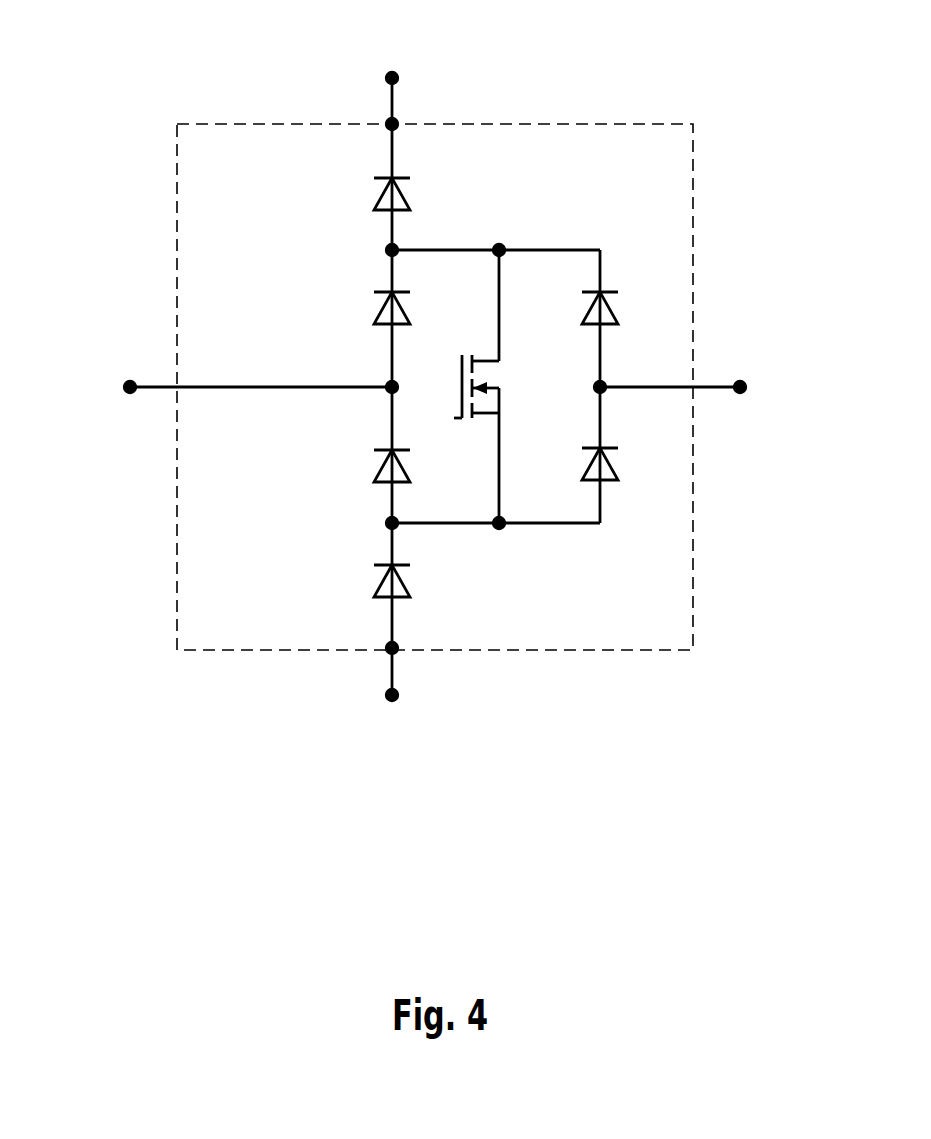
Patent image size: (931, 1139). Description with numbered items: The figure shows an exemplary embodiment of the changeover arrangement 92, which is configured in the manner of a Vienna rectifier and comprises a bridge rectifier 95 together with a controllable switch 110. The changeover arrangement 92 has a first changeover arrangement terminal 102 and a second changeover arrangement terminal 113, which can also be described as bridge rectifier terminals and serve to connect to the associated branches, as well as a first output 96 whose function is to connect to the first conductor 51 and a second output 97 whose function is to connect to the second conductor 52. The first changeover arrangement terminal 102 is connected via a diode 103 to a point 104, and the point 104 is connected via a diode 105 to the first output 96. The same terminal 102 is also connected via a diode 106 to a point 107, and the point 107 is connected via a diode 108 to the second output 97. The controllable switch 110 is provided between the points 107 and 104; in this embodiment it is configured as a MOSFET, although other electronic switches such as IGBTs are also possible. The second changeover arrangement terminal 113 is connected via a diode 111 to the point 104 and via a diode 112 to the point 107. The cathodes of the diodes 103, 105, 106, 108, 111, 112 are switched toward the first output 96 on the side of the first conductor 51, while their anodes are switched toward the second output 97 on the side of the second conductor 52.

The first conductor 51 is at (392, 76).
The second conductor 52 is at (392, 698).
The changeover arrangement 92 is at (694, 182).
The bridge rectifier 95 is at (450, 240).
The first output 96 is at (394, 122).
The second output 97 is at (394, 650).
The first changeover arrangement terminal 102 is at (390, 387).
The diode 103 is at (380, 312).
The point 104 is at (390, 250).
The diode 105 is at (380, 197).
The diode 106 is at (380, 470).
The point 107 is at (390, 523).
The diode 108 is at (380, 585).
The controllable switch 110 is at (471, 421).
The diode 111 is at (585, 312).
The diode 112 is at (585, 470).
The second changeover arrangement terminal 113 is at (598, 387).